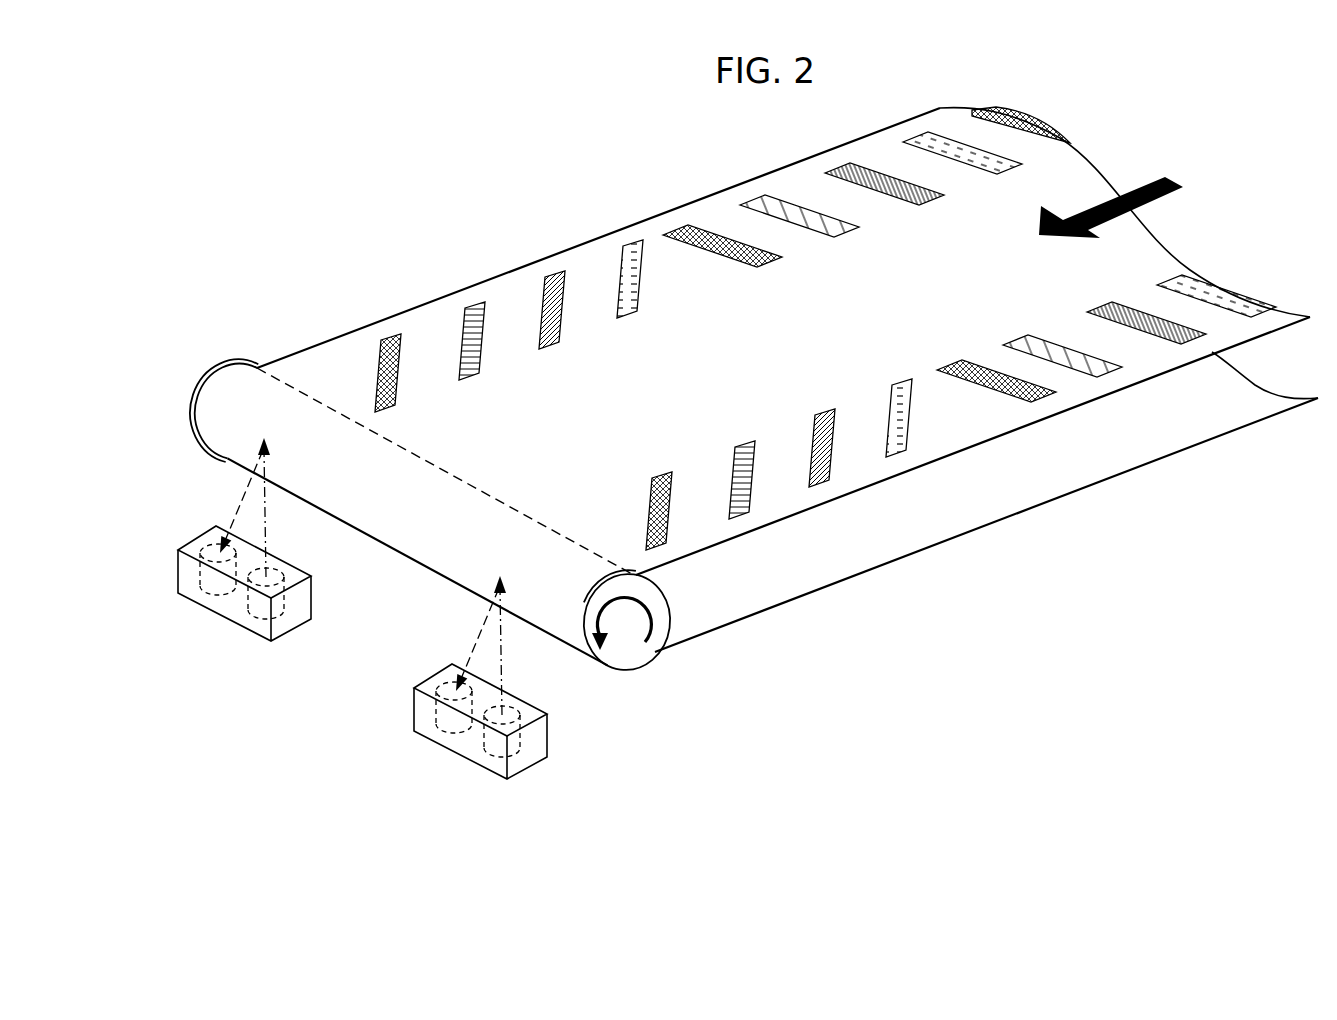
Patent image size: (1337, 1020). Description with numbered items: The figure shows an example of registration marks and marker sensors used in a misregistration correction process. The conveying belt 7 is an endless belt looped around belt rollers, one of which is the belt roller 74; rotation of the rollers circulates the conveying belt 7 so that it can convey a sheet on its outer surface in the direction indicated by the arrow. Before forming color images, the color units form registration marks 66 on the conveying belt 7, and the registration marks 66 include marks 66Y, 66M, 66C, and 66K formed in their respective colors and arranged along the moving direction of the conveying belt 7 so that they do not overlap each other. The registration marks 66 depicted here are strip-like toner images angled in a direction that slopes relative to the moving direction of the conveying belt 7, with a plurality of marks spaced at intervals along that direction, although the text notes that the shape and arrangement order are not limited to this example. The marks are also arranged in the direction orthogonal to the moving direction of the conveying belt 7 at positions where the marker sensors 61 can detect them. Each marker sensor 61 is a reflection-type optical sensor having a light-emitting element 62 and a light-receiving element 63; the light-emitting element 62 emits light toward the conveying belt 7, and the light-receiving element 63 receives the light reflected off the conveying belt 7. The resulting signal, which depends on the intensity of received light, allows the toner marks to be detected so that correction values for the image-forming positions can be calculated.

The conveying belt 7 is at (511, 280).
The belt roller 74 is at (620, 657).
The registration marks 66 is at (802, 381).
The black mark 66K is at (401, 339).
The cyan mark 66C is at (747, 502).
The magenta mark 66M is at (830, 467).
The yellow mark 66Y is at (810, 412).
The marker sensor 61 is at (278, 628).
The light-emitting element 62 is at (283, 580).
The light-receiving element 63 is at (207, 547).